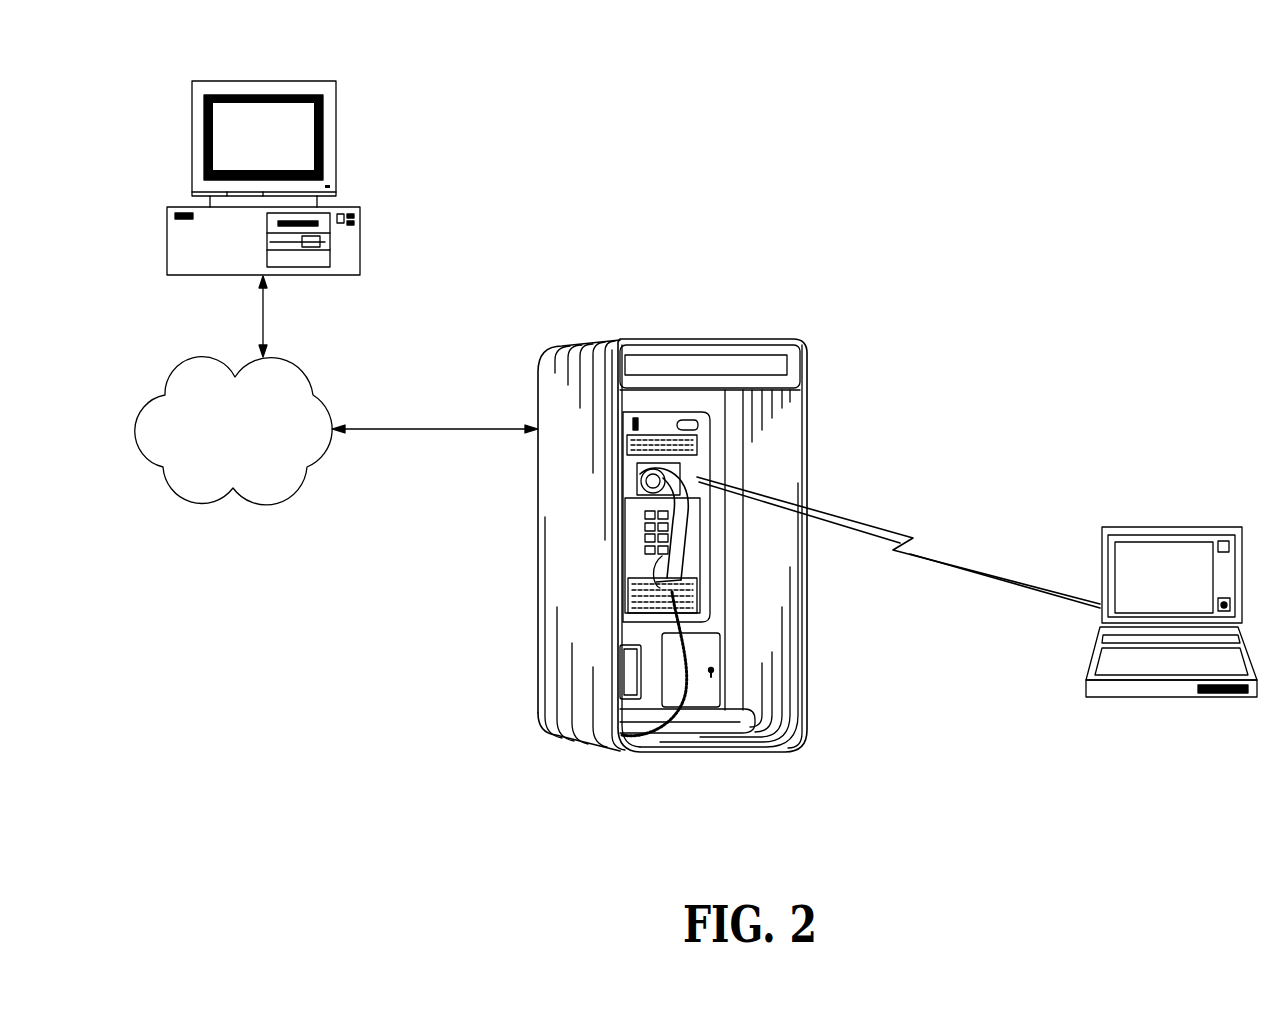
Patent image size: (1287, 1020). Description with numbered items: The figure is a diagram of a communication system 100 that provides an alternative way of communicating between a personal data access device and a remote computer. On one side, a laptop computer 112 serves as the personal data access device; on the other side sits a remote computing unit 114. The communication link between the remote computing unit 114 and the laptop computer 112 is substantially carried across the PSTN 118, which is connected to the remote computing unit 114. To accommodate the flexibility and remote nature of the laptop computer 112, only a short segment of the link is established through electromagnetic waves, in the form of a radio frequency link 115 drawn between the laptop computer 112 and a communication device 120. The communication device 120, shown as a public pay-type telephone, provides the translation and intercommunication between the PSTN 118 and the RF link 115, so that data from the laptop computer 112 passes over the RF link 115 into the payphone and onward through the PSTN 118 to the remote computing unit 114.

The communication system 100 is at (944, 337).
The laptop computer 112 is at (1172, 527).
The remote computing unit 114 is at (360, 224).
The radio frequency (RF) link 115 is at (912, 557).
The PSTN 118 is at (313, 395).
The communication device 120 is at (808, 713).